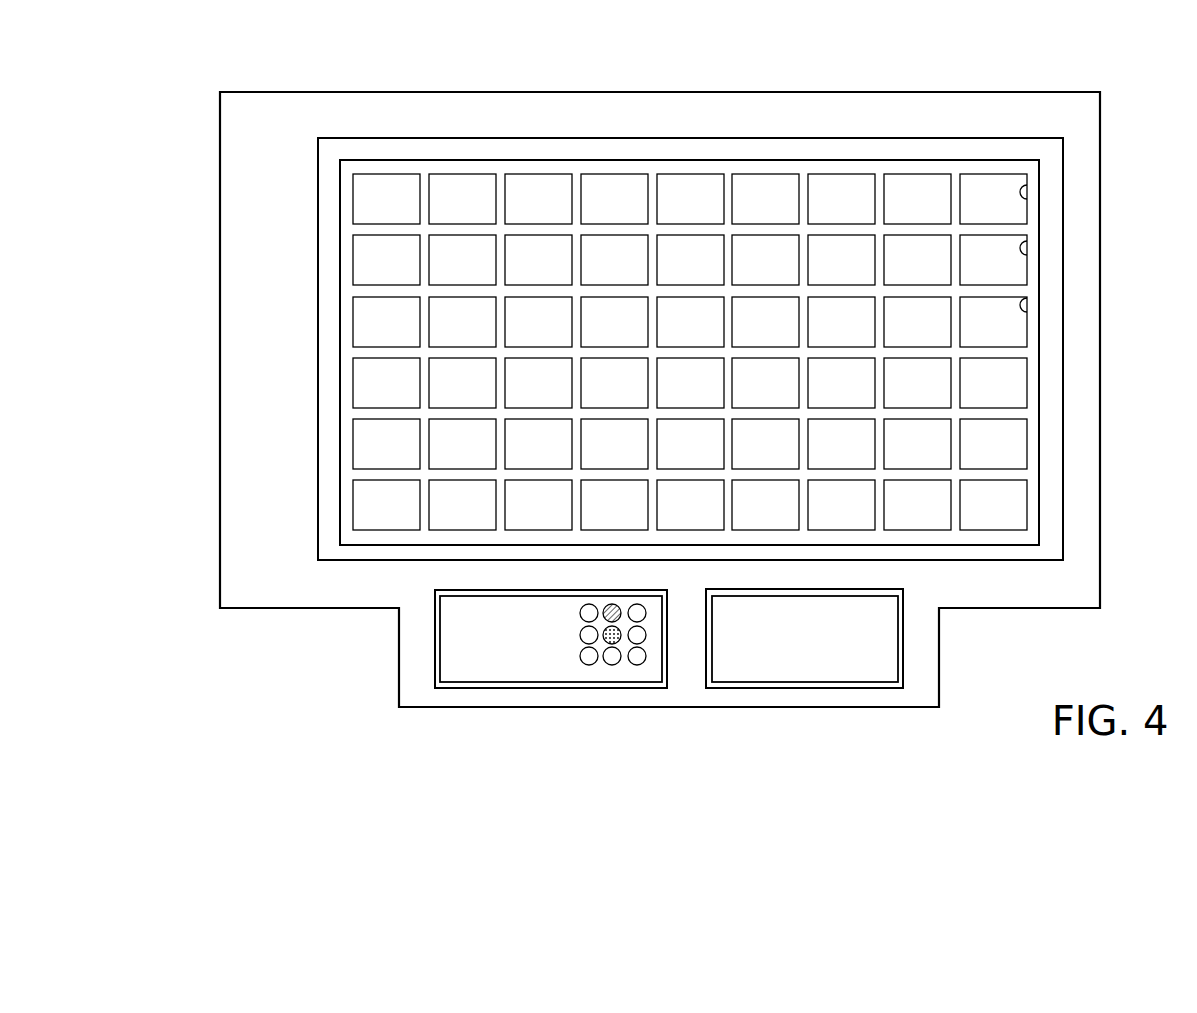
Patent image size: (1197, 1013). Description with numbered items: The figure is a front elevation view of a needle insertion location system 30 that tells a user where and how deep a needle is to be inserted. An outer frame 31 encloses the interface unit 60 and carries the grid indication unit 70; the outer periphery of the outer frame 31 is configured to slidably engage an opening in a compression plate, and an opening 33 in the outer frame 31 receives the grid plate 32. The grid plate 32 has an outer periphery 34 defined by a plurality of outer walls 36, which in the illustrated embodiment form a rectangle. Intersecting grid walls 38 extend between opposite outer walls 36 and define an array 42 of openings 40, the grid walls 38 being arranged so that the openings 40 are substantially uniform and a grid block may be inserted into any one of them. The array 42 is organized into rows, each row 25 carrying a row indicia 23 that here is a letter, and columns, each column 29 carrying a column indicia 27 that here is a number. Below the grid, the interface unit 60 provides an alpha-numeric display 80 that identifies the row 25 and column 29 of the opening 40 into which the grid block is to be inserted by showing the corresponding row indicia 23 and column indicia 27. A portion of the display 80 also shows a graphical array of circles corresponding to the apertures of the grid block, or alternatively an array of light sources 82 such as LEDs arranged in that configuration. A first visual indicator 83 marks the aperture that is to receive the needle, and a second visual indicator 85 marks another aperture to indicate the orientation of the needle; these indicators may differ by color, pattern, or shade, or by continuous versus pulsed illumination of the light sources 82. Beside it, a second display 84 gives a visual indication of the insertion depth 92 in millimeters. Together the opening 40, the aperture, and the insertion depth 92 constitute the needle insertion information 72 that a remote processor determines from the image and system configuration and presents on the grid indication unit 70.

The needle insertion location system 30 is at (849, 66).
The outer frame 31 is at (240, 346).
The opening 33 is at (423, 159).
The outer periphery 34 is at (1010, 158).
The outer walls 36 is at (520, 166).
The grid plate 32 is at (617, 166).
The grid walls 38 is at (652, 200).
The openings 40 is at (1027, 185).
The array 42 is at (1080, 434).
The column indicia 27 is at (367, 118).
The row indicia 23 is at (287, 178).
The grid indication unit 70 is at (372, 106).
The row 25 is at (348, 372).
The column 29 is at (543, 528).
The interface unit 60 is at (388, 628).
The alpha-numeric display 80 is at (435, 663).
The light sources 82 is at (589, 665).
The first visual indicator 83 is at (620, 635).
The second visual indicator 85 is at (616, 606).
The display 84 is at (900, 632).
The needle insertion information 72 is at (503, 713).
The insertion depth 92 is at (765, 712).